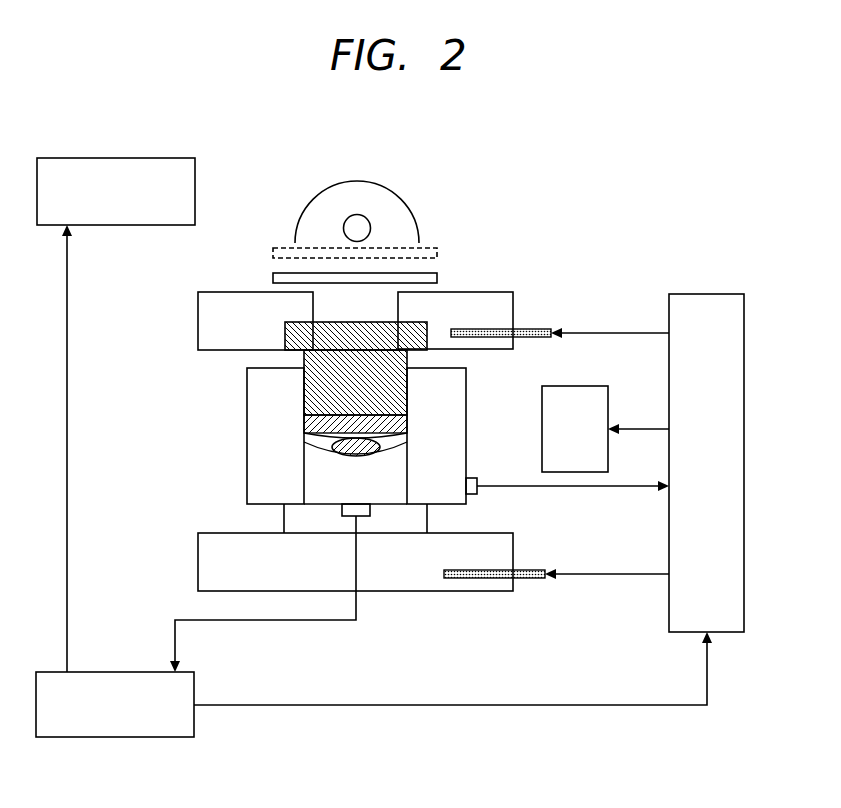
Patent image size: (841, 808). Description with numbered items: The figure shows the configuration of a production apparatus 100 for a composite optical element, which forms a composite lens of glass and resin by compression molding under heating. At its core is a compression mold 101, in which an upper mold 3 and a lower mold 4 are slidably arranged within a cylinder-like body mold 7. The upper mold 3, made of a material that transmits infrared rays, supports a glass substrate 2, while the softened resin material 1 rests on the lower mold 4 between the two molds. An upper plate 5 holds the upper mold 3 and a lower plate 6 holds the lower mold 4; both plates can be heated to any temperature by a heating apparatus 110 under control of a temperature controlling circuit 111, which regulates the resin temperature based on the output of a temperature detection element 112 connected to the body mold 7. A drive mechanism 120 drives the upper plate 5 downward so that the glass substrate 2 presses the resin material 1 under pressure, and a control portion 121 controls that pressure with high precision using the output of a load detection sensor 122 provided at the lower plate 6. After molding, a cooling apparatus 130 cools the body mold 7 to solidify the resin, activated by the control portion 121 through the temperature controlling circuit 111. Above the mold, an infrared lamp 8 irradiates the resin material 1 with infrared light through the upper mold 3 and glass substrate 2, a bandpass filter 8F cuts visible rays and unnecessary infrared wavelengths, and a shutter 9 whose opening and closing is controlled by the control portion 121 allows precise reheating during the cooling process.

The resin material 1 is at (338, 444).
The glass substrate 2 is at (315, 423).
The upper mold 3 is at (315, 360).
The lower mold 4 is at (316, 484).
The upper plate 5 is at (503, 308).
The lower plate 6 is at (510, 545).
The body mold 7 is at (466, 443).
The infrared lamp 8 is at (361, 224).
The bandpass filter 8F is at (437, 252).
The shutter 9 is at (437, 278).
The production apparatus 100 is at (554, 168).
The compression mold 101 is at (241, 398).
The heating apparatus 110 is at (540, 337).
The temperature controlling circuit 111 is at (706, 294).
The temperature detection element 112 is at (478, 490).
The drive mechanism 120 is at (160, 158).
The control portion 121 is at (196, 685).
The load detection sensor 122 is at (362, 516).
The cooling apparatus 130 is at (610, 393).